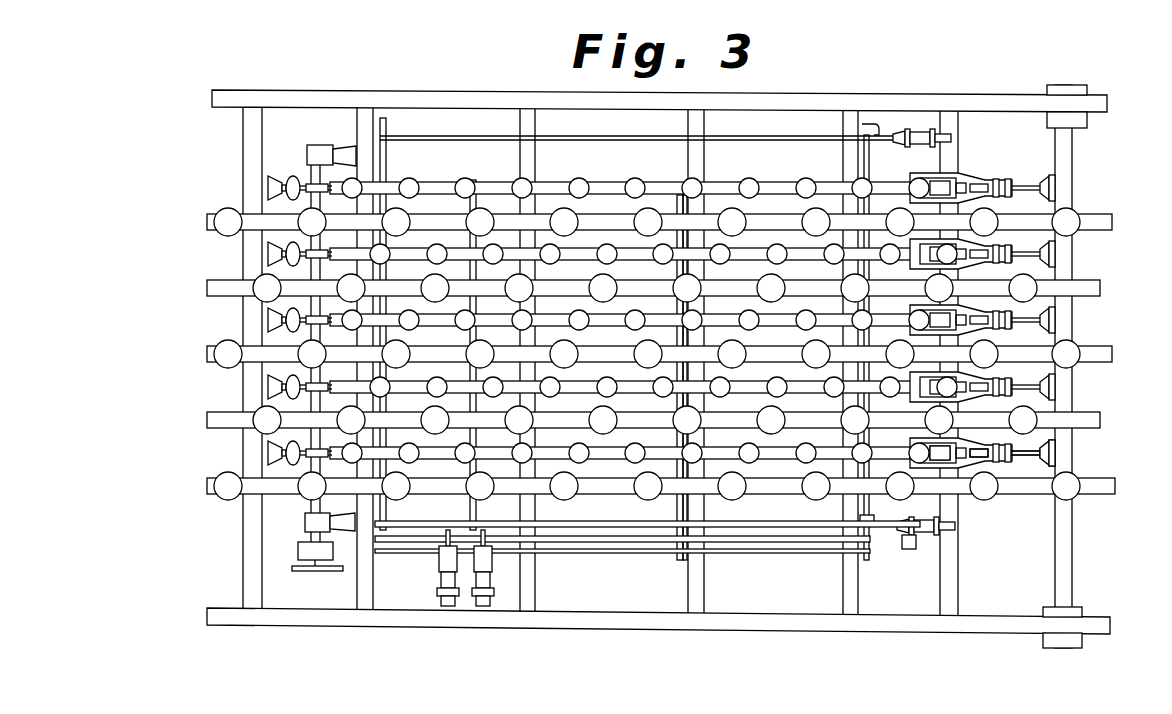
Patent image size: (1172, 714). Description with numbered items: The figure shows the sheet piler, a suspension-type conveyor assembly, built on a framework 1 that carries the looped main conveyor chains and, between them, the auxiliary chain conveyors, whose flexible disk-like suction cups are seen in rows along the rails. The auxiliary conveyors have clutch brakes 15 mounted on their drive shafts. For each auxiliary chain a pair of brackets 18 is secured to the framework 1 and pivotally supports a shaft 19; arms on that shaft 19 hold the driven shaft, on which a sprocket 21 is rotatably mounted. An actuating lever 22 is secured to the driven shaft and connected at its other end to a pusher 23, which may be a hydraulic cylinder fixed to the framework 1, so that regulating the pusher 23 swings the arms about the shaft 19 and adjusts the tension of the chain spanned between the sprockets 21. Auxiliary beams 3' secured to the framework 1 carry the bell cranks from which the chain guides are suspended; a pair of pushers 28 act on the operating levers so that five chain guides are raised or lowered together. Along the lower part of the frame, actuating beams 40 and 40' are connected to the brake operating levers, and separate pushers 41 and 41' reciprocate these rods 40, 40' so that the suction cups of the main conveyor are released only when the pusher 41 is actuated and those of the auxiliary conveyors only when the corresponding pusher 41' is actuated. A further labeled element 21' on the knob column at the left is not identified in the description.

The framework 1 is at (742, 622).
The auxiliary beam 3' is at (657, 381).
The clutch brake 15 is at (296, 550).
The bracket 18 is at (900, 476).
The shaft 19 is at (1030, 452).
The sprocket 21 is at (1077, 497).
The adjusting knob 21' is at (248, 357).
The actuating lever 22 is at (993, 470).
The pusher 23 is at (944, 184).
The pusher 28 is at (928, 132).
The actuating beam 40 is at (647, 547).
The actuating beam 40' is at (580, 339).
The pusher 41 is at (434, 604).
The pusher 41' is at (499, 604).